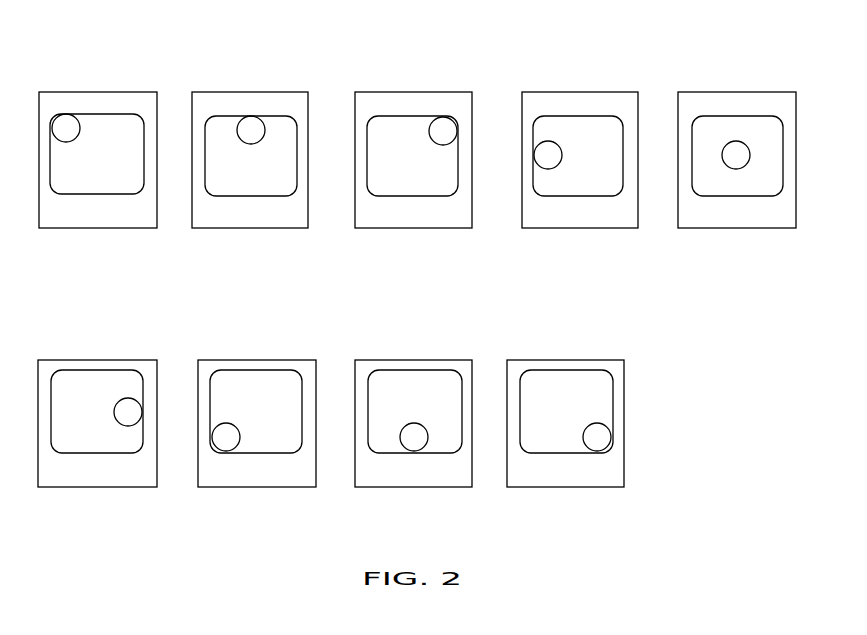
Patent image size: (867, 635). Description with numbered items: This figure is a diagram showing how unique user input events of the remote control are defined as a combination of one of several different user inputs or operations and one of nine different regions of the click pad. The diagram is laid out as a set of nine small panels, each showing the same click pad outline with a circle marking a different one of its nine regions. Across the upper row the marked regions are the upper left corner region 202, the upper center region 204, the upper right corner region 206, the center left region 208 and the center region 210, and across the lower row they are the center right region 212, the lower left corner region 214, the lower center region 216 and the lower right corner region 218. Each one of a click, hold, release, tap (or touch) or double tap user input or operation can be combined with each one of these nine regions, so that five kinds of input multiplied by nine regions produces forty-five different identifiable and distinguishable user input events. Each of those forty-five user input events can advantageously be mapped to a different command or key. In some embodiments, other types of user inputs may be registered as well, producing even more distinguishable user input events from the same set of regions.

The upper left corner region 202 is at (67, 115).
The upper center region 204 is at (252, 117).
The upper right corner region 206 is at (437, 120).
The center left region 208 is at (545, 143).
The center region 210 is at (736, 141).
The center right region 212 is at (122, 400).
The lower left corner region 214 is at (218, 423).
The lower center region 216 is at (415, 423).
The lower right corner region 218 is at (595, 427).